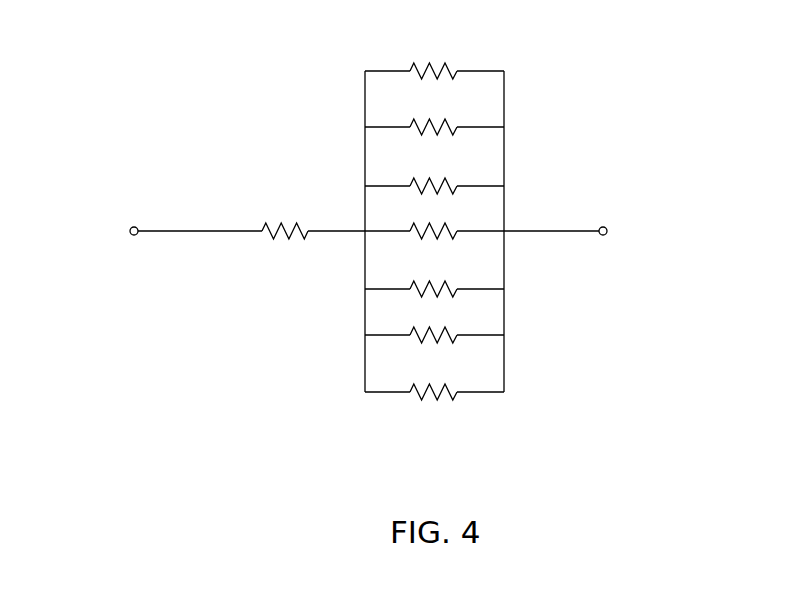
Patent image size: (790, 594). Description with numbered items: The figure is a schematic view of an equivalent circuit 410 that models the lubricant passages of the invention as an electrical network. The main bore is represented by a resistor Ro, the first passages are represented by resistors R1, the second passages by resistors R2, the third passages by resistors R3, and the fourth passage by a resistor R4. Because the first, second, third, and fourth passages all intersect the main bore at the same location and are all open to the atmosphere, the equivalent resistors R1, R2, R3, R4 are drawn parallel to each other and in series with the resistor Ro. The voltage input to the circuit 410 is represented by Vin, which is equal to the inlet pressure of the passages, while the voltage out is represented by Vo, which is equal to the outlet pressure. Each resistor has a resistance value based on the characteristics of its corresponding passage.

The equivalent circuit 410 is at (272, 117).
The voltage input Vin is at (132, 227).
The voltage out Vo is at (608, 227).
The resistor Ro is at (277, 226).
The resistors R1 is at (456, 70).
The resistors R2 is at (456, 127).
The resistors R3 is at (456, 186).
The resistor R4 is at (456, 231).